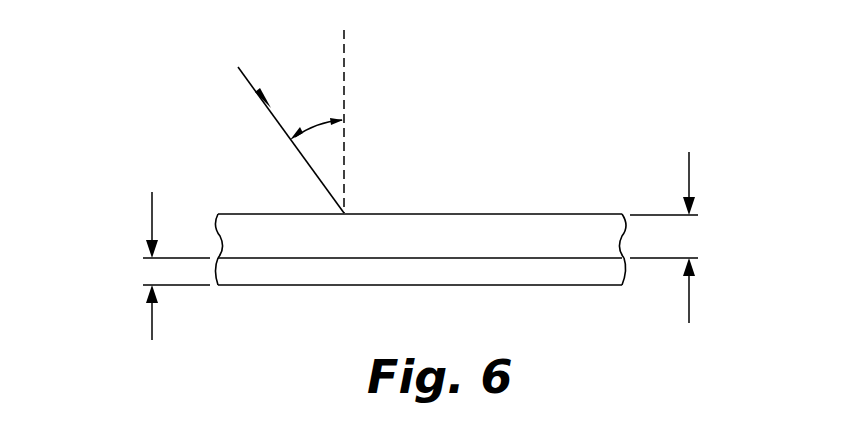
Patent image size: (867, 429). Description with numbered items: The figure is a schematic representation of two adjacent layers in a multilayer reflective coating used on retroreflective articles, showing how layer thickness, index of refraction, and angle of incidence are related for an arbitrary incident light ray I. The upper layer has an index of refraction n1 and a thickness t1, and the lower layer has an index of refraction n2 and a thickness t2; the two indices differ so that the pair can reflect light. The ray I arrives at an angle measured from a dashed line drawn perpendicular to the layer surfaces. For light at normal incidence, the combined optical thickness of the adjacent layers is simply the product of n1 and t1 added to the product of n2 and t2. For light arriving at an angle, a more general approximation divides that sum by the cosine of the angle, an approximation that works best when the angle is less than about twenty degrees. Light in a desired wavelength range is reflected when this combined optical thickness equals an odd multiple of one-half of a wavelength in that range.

The incident light ray I is at (247, 75).
The index of refraction of the first layer n1 is at (551, 224).
The index of refraction of the second layer n2 is at (540, 270).
The thickness of the first layer t1 is at (689, 162).
The thickness of the second layer t2 is at (152, 203).